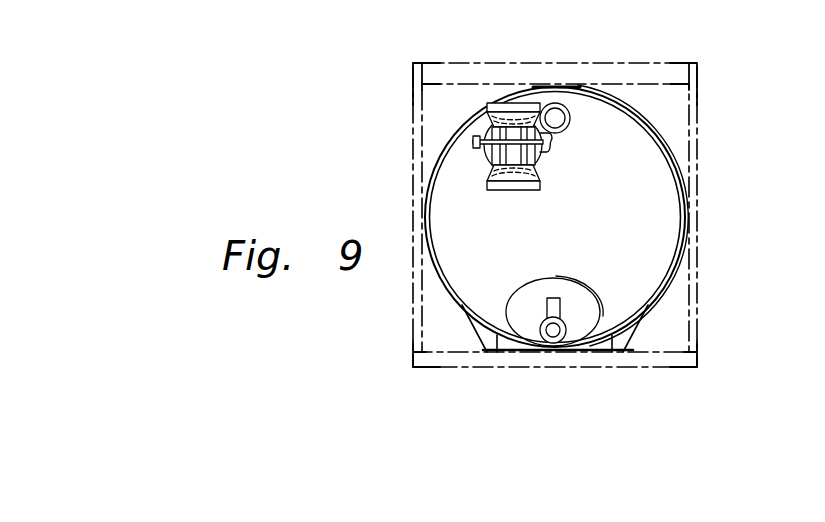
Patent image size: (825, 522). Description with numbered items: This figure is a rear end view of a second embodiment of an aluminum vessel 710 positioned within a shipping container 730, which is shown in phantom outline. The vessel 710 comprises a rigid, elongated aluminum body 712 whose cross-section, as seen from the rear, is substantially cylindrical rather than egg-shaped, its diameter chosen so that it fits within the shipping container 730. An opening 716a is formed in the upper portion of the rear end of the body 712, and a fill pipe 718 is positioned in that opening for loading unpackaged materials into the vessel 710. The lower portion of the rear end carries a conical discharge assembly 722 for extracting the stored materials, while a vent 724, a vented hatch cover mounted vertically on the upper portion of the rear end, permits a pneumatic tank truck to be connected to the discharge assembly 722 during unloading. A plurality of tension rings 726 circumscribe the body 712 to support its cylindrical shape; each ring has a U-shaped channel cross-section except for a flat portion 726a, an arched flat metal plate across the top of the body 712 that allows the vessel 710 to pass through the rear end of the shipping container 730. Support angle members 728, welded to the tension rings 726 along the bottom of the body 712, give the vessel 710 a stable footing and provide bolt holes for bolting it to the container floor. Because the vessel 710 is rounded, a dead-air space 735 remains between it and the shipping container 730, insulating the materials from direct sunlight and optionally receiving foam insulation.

The aluminum vessel 710 is at (440, 147).
The aluminum body 712 is at (431, 171).
The opening 716a is at (568, 124).
The fill pipe 718 is at (560, 145).
The conical discharge assembly 722 is at (587, 348).
The vent 724 is at (495, 191).
The tension rings 726 is at (684, 173).
The flat portion 726a is at (560, 86).
The support angle members 728 is at (481, 344).
The shipping container 730 is at (699, 150).
The dead-air space 735 is at (437, 101).